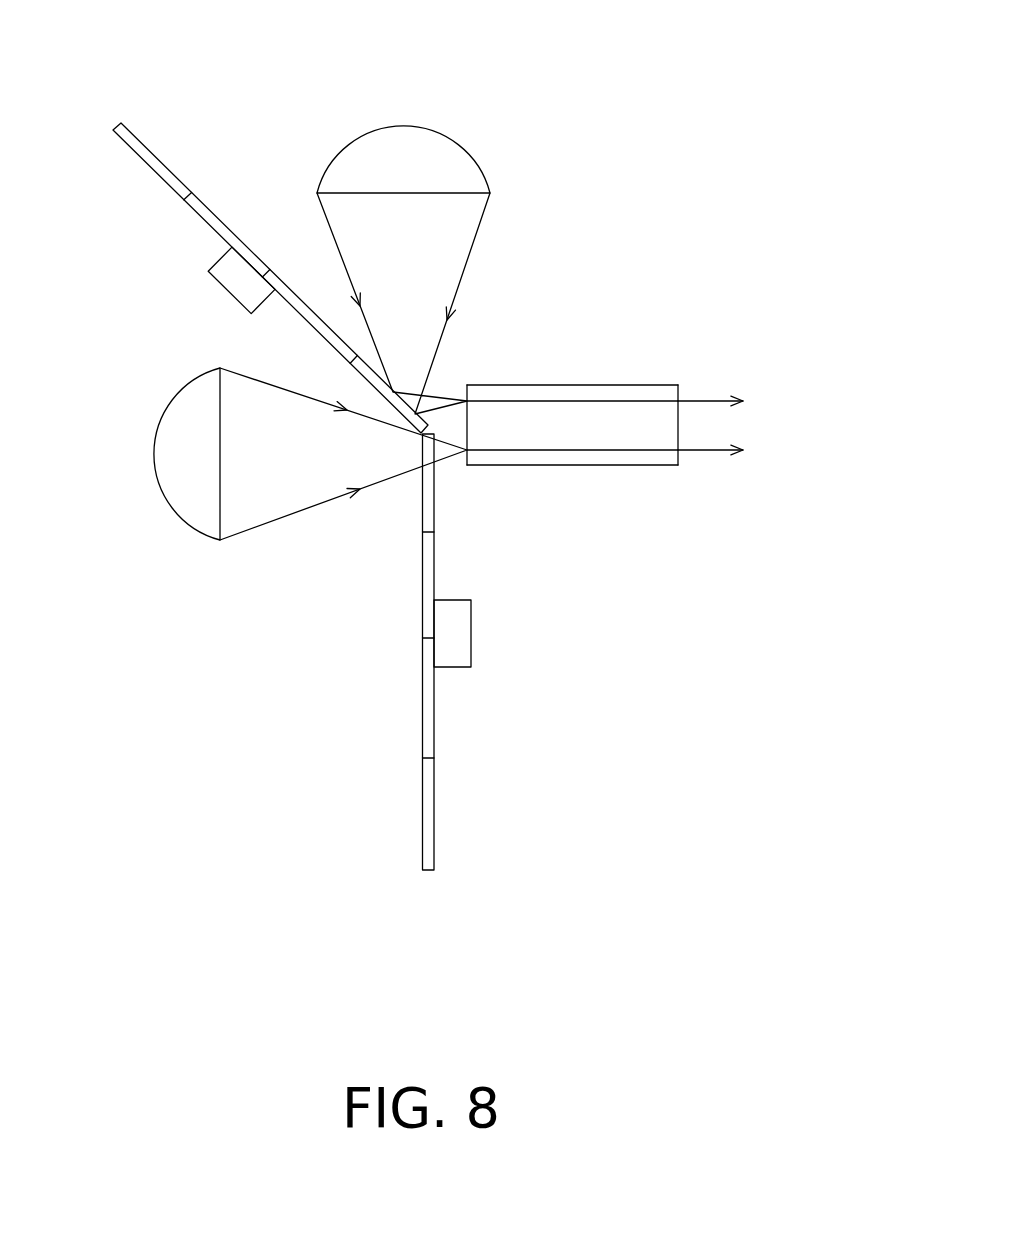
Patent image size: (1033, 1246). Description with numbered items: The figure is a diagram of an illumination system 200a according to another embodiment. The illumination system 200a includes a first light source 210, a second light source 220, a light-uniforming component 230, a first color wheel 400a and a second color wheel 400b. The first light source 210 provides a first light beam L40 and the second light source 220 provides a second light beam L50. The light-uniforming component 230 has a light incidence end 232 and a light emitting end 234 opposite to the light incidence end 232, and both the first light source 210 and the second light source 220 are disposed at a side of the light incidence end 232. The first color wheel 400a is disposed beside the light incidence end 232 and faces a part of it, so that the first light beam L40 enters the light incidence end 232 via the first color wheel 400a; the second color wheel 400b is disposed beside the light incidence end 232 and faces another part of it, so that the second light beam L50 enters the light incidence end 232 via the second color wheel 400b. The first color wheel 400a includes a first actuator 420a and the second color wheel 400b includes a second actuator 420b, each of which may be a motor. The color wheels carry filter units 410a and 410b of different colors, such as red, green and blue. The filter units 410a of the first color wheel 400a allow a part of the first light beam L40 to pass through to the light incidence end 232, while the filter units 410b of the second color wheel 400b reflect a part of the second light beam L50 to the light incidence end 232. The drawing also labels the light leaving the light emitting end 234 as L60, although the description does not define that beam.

The illumination system 200a is at (860, 902).
The first light source 210 is at (163, 440).
The second light source 220 is at (418, 137).
The light-uniforming component 230 is at (565, 417).
The light incidence end 232 is at (468, 430).
The light emitting end 234 is at (682, 390).
The first color wheel 400a is at (437, 652).
The second color wheel 400b is at (264, 219).
The filter units 410a is at (425, 512).
The filter units 410b is at (147, 153).
The first actuator 420a is at (462, 652).
The second actuator 420b is at (230, 290).
The first light beam L40 is at (263, 507).
The second light beam L50 is at (338, 221).
The combined light beam L60 is at (700, 450).